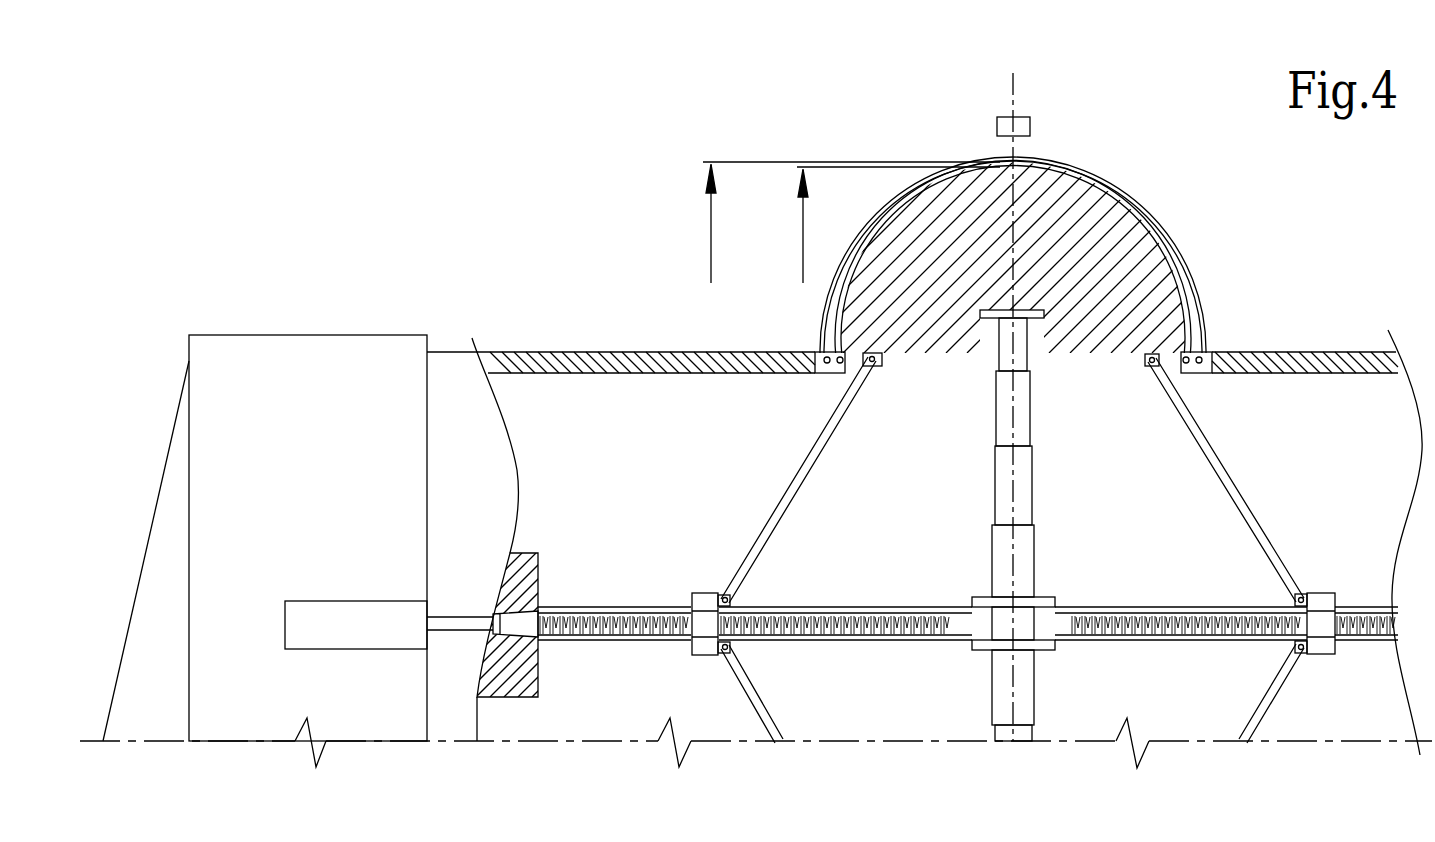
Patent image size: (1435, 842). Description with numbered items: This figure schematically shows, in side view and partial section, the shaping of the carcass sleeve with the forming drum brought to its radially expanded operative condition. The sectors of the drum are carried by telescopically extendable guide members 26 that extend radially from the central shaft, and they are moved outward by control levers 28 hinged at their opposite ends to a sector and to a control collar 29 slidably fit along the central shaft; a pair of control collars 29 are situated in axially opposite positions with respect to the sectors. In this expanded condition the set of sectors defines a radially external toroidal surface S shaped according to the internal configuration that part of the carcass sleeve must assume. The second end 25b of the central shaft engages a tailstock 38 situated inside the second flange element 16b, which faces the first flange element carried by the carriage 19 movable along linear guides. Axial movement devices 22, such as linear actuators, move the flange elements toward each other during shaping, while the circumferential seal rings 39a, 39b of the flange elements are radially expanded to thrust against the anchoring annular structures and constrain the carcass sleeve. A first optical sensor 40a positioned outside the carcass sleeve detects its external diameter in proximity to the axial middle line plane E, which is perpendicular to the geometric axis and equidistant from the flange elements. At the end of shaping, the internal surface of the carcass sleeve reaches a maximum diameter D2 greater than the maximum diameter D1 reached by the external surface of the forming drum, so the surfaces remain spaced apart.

The carriage 19 is at (158, 576).
The axial movement devices 22 is at (333, 619).
The tailstock 38 is at (531, 565).
The second end of the central shaft 25b is at (520, 630).
The second flange element 16b is at (630, 367).
The circumferential seal ring 39b is at (827, 368).
The circumferential seal ring 39a is at (1200, 368).
The radially external toroidal surface S is at (1147, 212).
The first optical sensor 40a is at (998, 127).
The axial middle line plane E is at (1013, 92).
The maximum diameter of the carcass sleeve internal surface D2 is at (711, 238).
The maximum diameter of the forming drum D1 is at (803, 237).
The telescopically extendable guide members 26 is at (1021, 485).
The control collar 29 is at (1319, 600).
The control levers 28 is at (758, 540).